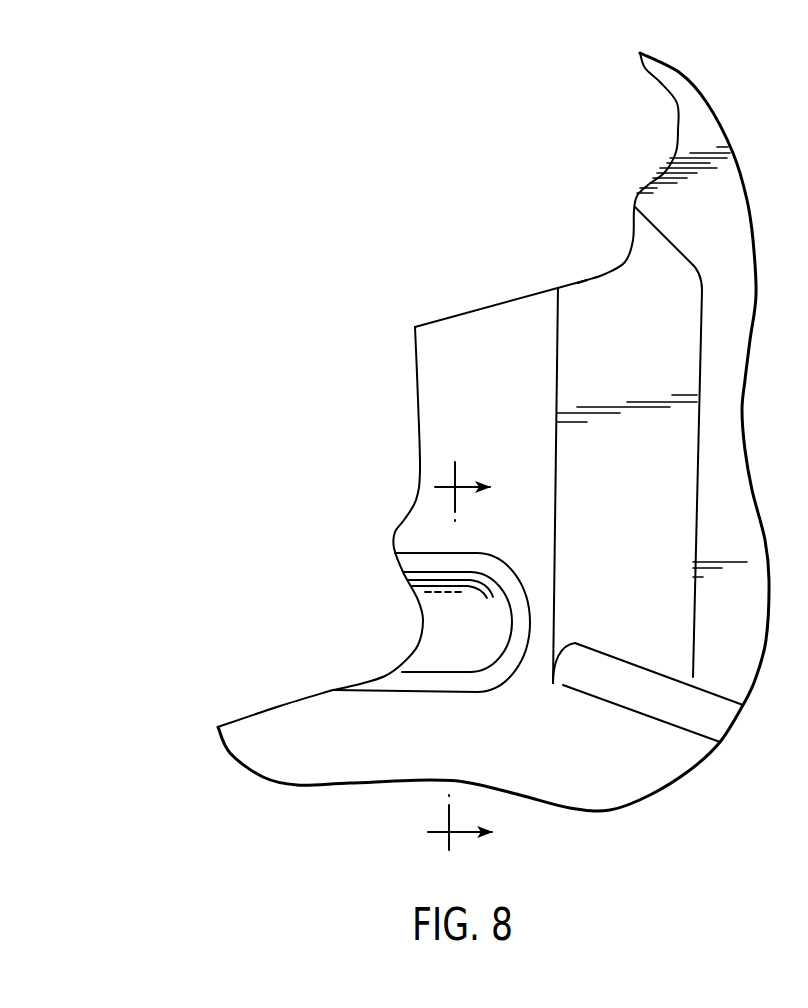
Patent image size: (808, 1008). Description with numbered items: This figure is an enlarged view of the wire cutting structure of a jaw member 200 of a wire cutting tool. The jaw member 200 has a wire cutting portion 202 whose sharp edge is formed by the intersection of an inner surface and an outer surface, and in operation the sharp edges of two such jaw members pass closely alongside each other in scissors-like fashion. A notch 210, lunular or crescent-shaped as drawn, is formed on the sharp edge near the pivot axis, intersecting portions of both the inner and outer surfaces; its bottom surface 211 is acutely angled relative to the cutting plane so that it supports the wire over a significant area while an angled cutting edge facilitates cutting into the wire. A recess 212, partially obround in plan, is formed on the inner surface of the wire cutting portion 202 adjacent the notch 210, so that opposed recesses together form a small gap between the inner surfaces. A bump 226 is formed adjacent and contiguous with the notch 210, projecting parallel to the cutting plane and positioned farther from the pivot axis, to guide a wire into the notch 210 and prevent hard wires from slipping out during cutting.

The jaw member 200 is at (623, 323).
The wire cutting portion 202 is at (250, 313).
The bump 226 is at (392, 528).
The notch 210 is at (419, 615).
The bottom surface 211 is at (419, 638).
The recess 212 is at (470, 607).